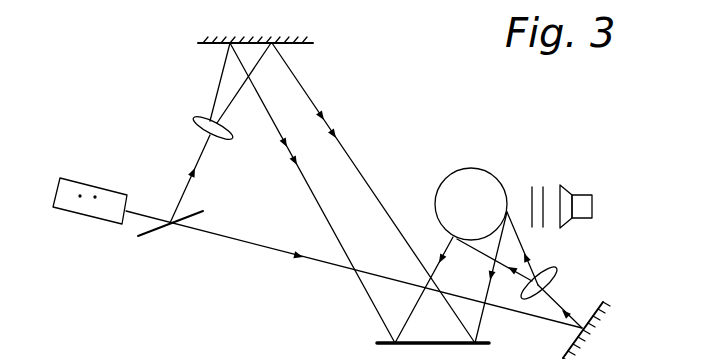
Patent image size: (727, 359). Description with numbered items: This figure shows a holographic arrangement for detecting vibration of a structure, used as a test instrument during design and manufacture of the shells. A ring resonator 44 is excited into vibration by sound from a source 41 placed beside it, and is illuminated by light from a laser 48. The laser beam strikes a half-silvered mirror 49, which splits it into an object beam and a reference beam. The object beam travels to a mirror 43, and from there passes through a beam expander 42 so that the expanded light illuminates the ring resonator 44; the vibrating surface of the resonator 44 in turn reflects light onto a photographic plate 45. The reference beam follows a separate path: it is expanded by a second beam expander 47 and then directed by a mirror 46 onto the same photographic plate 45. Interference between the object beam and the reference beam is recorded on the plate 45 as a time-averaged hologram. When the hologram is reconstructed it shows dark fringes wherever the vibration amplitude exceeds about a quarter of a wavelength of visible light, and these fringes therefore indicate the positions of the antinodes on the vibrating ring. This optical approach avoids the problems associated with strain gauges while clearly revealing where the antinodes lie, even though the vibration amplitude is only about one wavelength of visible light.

The sound source 41 is at (580, 195).
The beam expander 42 is at (560, 272).
The mirror 43 is at (602, 302).
The ring resonator 44 is at (474, 168).
The photographic plate 45 is at (390, 340).
The mirror 46 is at (297, 46).
The beam expander 47 is at (200, 118).
The laser 48 is at (90, 185).
The half-silvered mirror 49 is at (158, 230).